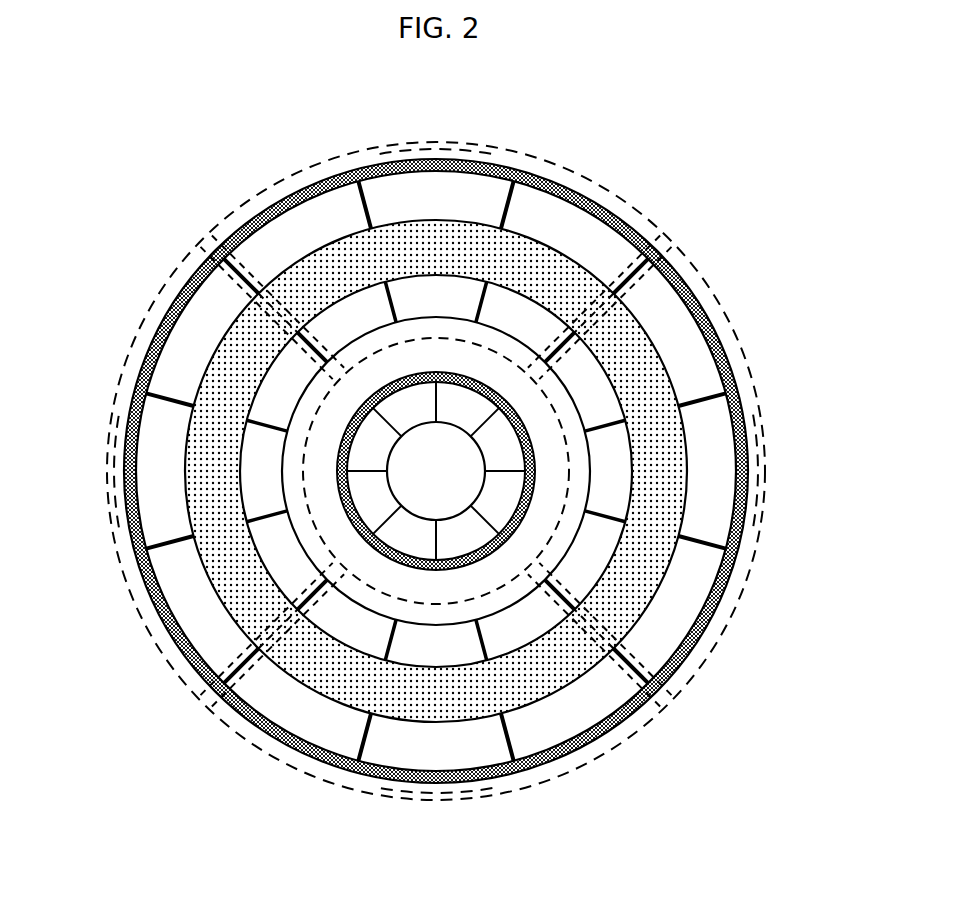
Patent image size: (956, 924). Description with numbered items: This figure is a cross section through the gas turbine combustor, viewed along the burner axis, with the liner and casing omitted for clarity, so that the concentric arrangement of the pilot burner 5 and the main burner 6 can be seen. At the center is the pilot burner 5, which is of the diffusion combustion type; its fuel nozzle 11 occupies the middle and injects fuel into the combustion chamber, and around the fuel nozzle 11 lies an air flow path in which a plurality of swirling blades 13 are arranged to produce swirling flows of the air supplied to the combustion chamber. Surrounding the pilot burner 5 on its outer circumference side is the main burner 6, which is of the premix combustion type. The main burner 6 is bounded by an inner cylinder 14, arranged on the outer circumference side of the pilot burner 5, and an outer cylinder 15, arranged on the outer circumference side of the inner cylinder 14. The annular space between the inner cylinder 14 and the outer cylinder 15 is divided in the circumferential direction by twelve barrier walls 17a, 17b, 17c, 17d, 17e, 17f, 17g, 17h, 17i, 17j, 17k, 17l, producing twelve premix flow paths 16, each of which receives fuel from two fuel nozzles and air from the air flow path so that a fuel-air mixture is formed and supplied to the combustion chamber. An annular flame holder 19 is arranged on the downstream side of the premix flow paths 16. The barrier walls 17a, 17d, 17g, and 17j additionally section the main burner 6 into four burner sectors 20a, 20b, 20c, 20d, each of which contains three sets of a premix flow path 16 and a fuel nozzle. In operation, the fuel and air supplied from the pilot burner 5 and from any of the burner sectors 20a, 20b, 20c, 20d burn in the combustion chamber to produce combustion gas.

The pilot burner 5 is at (492, 572).
The main burner 6 is at (537, 773).
The fuel nozzle 11 is at (447, 480).
The swirling blades 13 is at (447, 471).
The inner cylinder 14 is at (313, 377).
The outer cylinder 15 is at (280, 193).
The premix flow paths 16 is at (700, 480).
The barrier wall 17a is at (238, 262).
The barrier wall 17b is at (365, 210).
The barrier wall 17c is at (511, 200).
The barrier wall 17d is at (640, 272).
The barrier wall 17e is at (707, 403).
The barrier wall 17f is at (708, 549).
The barrier wall 17g is at (641, 703).
The barrier wall 17h is at (511, 742).
The barrier wall 17i is at (359, 741).
The barrier wall 17j is at (213, 670).
The barrier wall 17k is at (163, 543).
The barrier wall 17l is at (163, 390).
The annular flame holder 19 is at (582, 267).
The burner sector 20a is at (460, 143).
The burner sector 20b is at (766, 494).
The burner sector 20c is at (420, 803).
The burner sector 20d is at (106, 454).